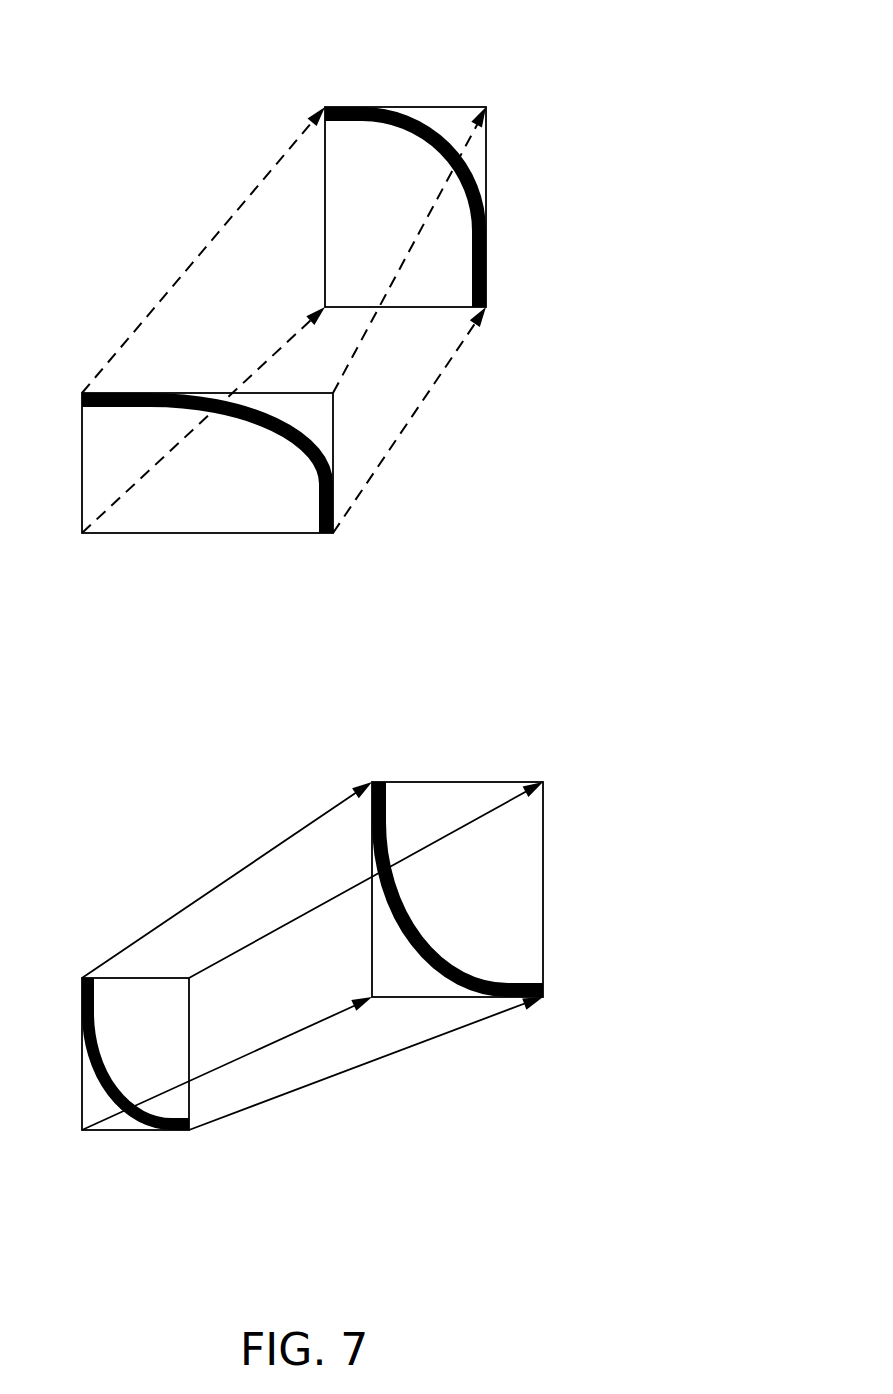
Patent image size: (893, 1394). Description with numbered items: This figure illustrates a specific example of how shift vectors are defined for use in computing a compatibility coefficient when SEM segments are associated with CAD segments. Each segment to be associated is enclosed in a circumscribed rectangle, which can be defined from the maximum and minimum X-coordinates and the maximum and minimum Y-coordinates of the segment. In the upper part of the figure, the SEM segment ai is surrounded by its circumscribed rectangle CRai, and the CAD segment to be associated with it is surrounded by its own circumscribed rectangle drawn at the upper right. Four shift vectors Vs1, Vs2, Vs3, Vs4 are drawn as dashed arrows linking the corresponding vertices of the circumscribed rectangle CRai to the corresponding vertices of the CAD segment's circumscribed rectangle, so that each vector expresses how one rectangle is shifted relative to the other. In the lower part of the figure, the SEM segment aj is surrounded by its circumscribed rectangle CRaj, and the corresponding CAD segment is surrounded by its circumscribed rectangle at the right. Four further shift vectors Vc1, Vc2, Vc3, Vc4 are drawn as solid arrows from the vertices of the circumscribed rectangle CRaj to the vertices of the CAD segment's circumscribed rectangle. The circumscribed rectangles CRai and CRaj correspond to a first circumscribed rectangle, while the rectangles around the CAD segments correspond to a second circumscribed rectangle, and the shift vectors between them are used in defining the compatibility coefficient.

The circumscribed rectangle of SEM segment ai CRai is at (108, 533).
The SEM segment ai is at (272, 438).
The shift vector Vs1 is at (418, 232).
The shift vector Vs2 is at (433, 389).
The shift vector Vs3 is at (172, 285).
The shift vector Vs4 is at (263, 358).
The circumscribed rectangle of SEM segment aj CRaj is at (113, 1135).
The SEM segment aj is at (118, 1082).
The shift vector Vc1 is at (493, 808).
The shift vector Vc2 is at (217, 885).
The shift vector Vc3 is at (323, 1023).
The shift vector Vc4 is at (348, 1072).